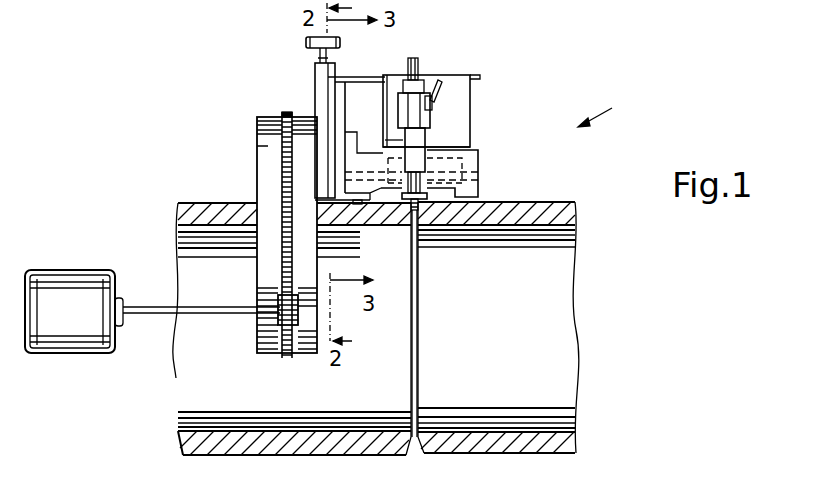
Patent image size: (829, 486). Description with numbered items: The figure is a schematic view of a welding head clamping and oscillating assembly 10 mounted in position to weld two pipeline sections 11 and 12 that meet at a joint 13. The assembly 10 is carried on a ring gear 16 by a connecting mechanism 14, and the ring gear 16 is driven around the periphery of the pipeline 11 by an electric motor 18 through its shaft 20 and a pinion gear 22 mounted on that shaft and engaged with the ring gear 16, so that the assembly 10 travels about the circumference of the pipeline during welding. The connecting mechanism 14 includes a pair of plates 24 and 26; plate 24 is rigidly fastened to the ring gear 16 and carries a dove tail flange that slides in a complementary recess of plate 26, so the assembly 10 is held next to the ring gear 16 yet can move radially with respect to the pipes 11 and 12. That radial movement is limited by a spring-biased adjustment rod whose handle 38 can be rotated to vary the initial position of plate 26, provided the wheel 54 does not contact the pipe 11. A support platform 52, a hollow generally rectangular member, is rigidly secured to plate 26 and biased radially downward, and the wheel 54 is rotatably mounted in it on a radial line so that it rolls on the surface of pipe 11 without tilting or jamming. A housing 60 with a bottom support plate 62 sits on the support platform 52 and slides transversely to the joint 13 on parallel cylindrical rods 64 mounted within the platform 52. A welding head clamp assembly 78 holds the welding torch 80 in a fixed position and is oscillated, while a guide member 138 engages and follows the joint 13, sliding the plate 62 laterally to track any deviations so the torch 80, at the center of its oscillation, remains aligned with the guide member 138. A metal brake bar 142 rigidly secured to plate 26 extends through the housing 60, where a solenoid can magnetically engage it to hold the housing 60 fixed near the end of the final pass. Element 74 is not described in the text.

The welding head clamping and oscillating assembly 10 is at (609, 111).
The pipeline section 11 is at (325, 449).
The pipeline section 12 is at (541, 441).
The joint 13 is at (414, 447).
The connecting mechanism 14 is at (315, 71).
The ring gear 16 is at (257, 117).
The electric motor 18 is at (90, 270).
The shaft 20 is at (155, 314).
The pinion gear 22 is at (280, 310).
The plate 24 is at (319, 97).
The plate 26 is at (340, 107).
The handle 38 is at (691, 484).
The support platform 52 is at (478, 159).
The wheel 54 is at (360, 206).
The housing 60 is at (462, 92).
The bottom support plate 62 is at (466, 146).
The cylindrical rods 64 is at (478, 175).
The element 74 is at (792, 482).
The welding head clamp assembly 78 is at (434, 117).
The welding head or torch 80 is at (420, 137).
The guide member 138 is at (421, 208).
The brake bar 142 is at (362, 78).